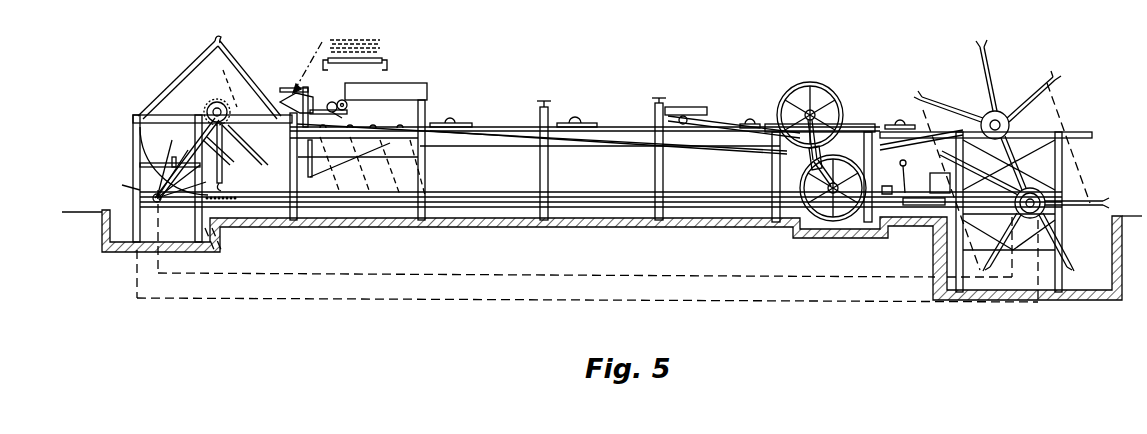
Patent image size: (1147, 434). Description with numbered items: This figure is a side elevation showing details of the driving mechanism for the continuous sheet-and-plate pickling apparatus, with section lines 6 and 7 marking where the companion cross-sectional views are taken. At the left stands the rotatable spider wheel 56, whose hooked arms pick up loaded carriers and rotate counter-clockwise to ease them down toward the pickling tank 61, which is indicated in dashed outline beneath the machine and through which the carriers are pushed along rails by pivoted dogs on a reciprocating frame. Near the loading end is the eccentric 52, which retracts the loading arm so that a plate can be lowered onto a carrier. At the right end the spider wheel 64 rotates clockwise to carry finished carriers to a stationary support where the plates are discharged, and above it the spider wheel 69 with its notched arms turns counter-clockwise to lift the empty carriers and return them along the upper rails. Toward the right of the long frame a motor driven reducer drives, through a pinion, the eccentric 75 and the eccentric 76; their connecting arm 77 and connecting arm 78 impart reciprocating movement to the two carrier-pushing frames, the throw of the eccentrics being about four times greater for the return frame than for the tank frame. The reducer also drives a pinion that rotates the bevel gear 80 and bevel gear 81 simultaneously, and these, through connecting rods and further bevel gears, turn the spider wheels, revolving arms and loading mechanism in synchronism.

The eccentric 52 is at (333, 102).
The spider wheel 56 is at (237, 74).
The pickling tank 61 is at (377, 302).
The spider wheel 64 is at (1073, 235).
The spider wheel 69 is at (1003, 85).
The eccentric 75 is at (786, 95).
The eccentric 76 is at (810, 215).
The connecting arm 77 is at (718, 121).
The connecting arm 78 is at (888, 194).
The bevel gear 80 is at (812, 163).
The bevel gear 81 is at (821, 157).
The section line 6 is at (847, 263).
The section line 7 is at (601, 250).